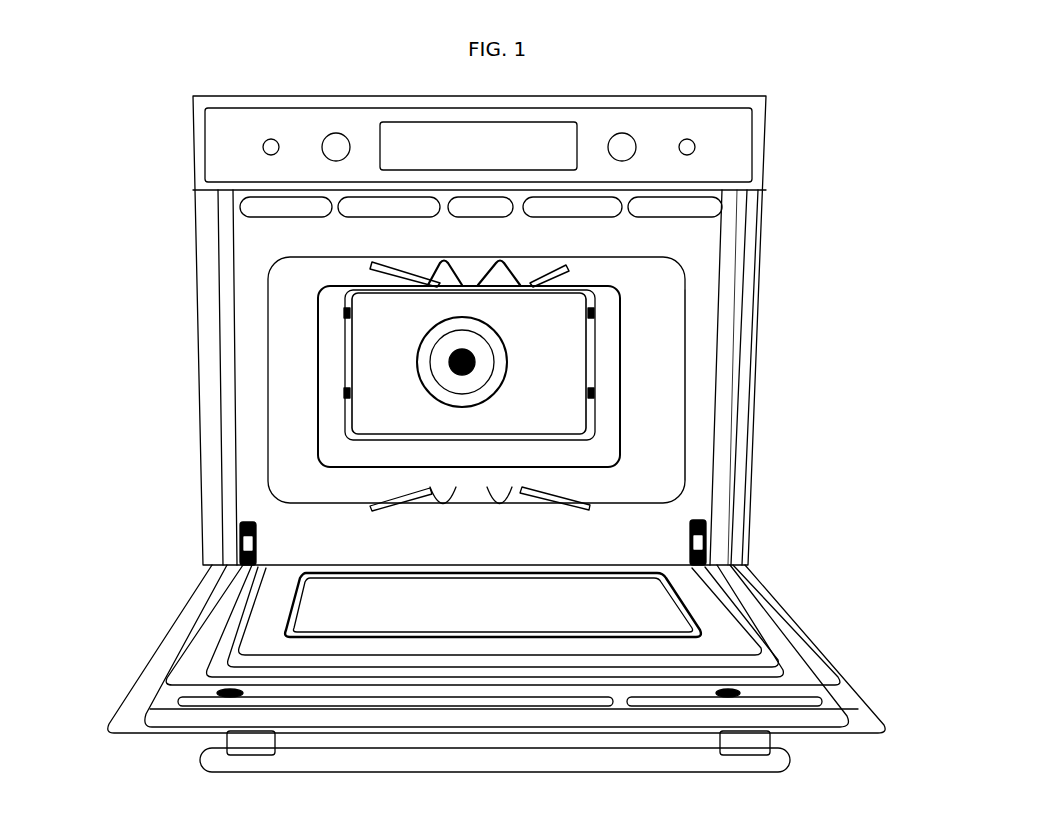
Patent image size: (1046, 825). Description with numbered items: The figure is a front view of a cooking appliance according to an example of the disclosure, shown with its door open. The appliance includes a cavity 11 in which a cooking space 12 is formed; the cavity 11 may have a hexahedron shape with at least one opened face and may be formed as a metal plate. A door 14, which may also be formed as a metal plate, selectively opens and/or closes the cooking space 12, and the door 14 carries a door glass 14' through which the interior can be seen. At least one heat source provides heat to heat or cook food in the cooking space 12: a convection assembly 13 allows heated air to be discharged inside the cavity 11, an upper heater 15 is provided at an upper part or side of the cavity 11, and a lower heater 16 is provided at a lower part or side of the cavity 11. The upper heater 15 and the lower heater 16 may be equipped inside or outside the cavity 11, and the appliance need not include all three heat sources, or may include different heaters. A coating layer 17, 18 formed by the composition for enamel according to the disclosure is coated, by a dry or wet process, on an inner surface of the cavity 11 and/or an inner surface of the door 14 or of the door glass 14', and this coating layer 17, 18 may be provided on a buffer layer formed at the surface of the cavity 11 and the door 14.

The cavity 11 is at (300, 283).
The cooking space 12 is at (312, 270).
The convection assembly 13 is at (406, 362).
The door 14 is at (465, 668).
The door glass 14' is at (573, 612).
The upper heater 15 is at (628, 288).
The lower heater 16 is at (615, 488).
The coating layer 17 is at (657, 380).
The coating layer 18 is at (728, 643).